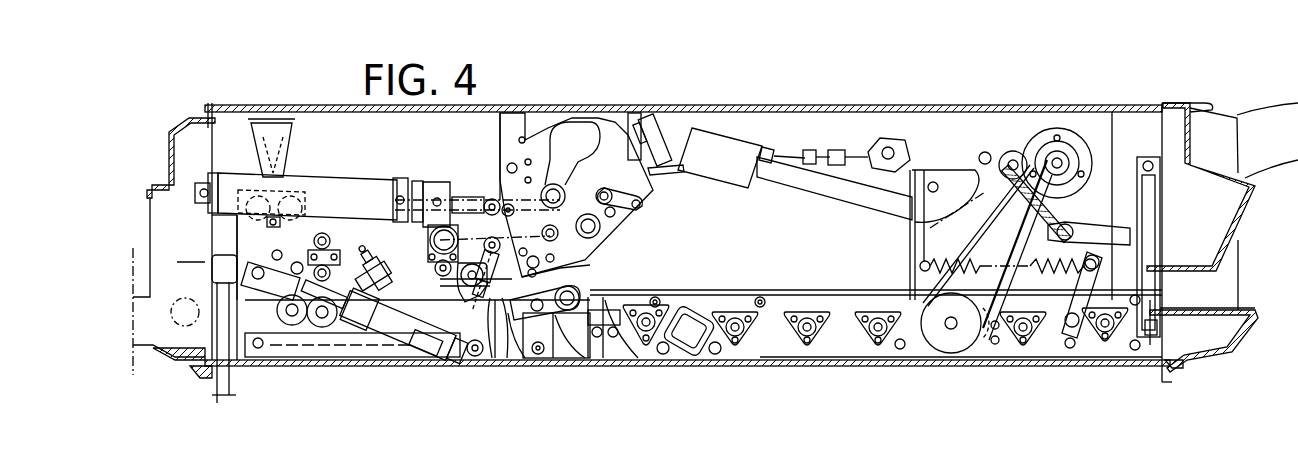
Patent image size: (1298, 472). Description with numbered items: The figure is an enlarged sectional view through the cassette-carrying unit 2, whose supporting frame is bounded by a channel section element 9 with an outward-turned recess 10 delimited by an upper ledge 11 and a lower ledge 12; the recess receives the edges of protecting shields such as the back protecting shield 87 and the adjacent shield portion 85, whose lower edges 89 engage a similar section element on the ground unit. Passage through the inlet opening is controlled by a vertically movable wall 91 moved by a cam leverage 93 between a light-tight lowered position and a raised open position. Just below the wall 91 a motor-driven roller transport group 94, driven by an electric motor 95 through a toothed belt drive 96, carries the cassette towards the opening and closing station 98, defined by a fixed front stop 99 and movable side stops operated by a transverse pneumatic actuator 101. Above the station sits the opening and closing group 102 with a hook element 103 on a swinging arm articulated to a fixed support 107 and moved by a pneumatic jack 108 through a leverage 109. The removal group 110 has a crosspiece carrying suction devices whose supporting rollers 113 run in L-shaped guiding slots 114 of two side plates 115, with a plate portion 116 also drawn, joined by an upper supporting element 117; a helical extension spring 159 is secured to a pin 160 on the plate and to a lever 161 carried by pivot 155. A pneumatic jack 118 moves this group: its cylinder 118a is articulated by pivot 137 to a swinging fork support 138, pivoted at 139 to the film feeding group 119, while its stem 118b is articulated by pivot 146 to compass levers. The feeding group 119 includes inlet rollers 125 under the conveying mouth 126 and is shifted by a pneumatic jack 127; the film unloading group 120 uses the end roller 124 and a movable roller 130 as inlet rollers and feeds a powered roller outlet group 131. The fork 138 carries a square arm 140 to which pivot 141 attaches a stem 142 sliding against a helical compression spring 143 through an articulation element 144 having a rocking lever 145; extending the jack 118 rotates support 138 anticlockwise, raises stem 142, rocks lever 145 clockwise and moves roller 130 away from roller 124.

The cassette-carrying unit 2 is at (849, 100).
The channel section element 9 is at (218, 398).
The recess 10 is at (1180, 107).
The upper ledge 11 is at (1178, 103).
The lower ledge 12 is at (1168, 112).
The cover 85 is at (205, 118).
The back protecting shield 87 is at (170, 158).
The lower edges of protecting shields 89 is at (198, 378).
The vertically movable wall 91 is at (1215, 255).
The cam leverage 93 is at (1100, 236).
The motor-driven roller transport group 94 is at (847, 337).
The electric motor 95 is at (1040, 140).
The toothed belt drive 96 is at (965, 320).
The opening and closing station 98 is at (760, 290).
The fixed front stop 99 is at (682, 352).
The transverse pneumatic actuator 101 is at (722, 357).
The opening and closing group 102 is at (786, 121).
The hook element 103 is at (672, 160).
The fixed support 107 is at (950, 185).
The pneumatic jack 108 is at (712, 125).
The leverage 109 is at (888, 147).
The removal group 110 is at (481, 192).
The supporting rollers 113 is at (565, 185).
The L-shaped guiding slots 114 is at (590, 123).
The side plates 115 is at (652, 228).
The hook 116 is at (530, 160).
The upper supporting element 117 is at (548, 128).
The pneumatic jack 118 is at (377, 178).
The cylinder of jack 118a is at (326, 185).
The stem of jack 118b is at (478, 190).
The film feeding group 119 is at (238, 236).
The film unloading group 120 is at (270, 362).
The powered roller 124 is at (600, 266).
The inlet rollers 125 is at (288, 226).
The conveying mouth 126 is at (272, 135).
The pneumatic jack 127 is at (385, 330).
The movable roller 130 is at (775, 270).
The powered roller outlet group 131 is at (141, 294).
The pivot 137 is at (435, 182).
The swinging fork support 138 is at (403, 175).
The pivot 139 is at (428, 240).
The square arm 140 is at (381, 269).
The pivot 141 is at (418, 322).
The stem 142 is at (548, 358).
The helical compression spring 143 is at (472, 355).
The articulation element 144 is at (512, 358).
The rocking lever 145 is at (632, 358).
The pivot 146 is at (515, 165).
The pivot 155 is at (648, 210).
The helical extension spring 159 is at (685, 172).
The pin 160 is at (612, 238).
The lever 161 is at (645, 195).